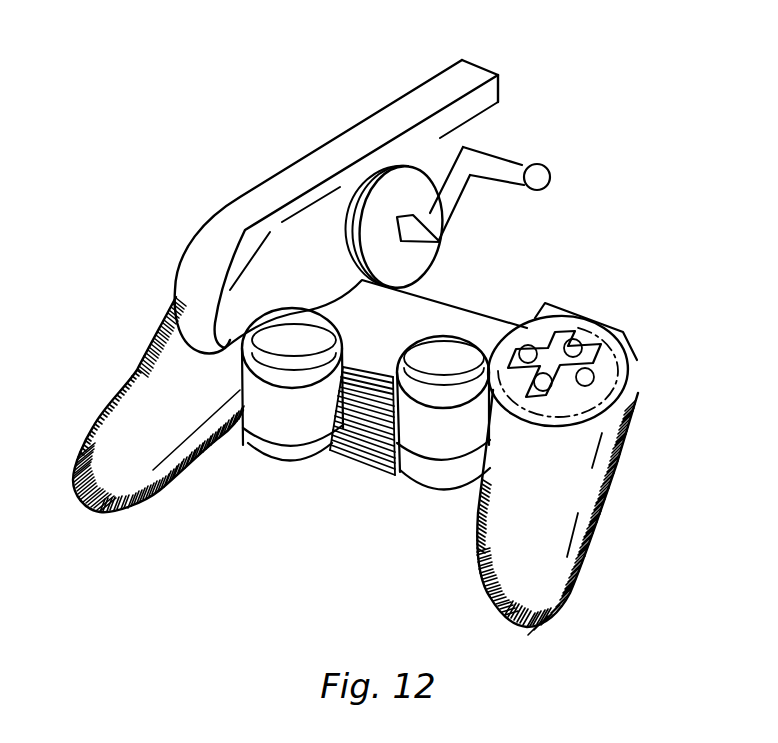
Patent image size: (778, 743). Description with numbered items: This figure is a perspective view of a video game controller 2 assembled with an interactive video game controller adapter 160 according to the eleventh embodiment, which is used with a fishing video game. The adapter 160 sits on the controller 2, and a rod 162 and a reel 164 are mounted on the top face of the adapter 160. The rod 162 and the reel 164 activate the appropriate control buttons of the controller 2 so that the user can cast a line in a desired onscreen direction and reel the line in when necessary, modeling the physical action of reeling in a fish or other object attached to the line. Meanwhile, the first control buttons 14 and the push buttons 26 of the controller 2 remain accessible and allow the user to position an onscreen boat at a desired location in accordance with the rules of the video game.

The video game controller 2 is at (547, 620).
The first control buttons 14 is at (590, 372).
The push buttons 26 is at (445, 369).
The adapter 160 is at (390, 328).
The rod 162 is at (441, 90).
The reel 164 is at (423, 192).